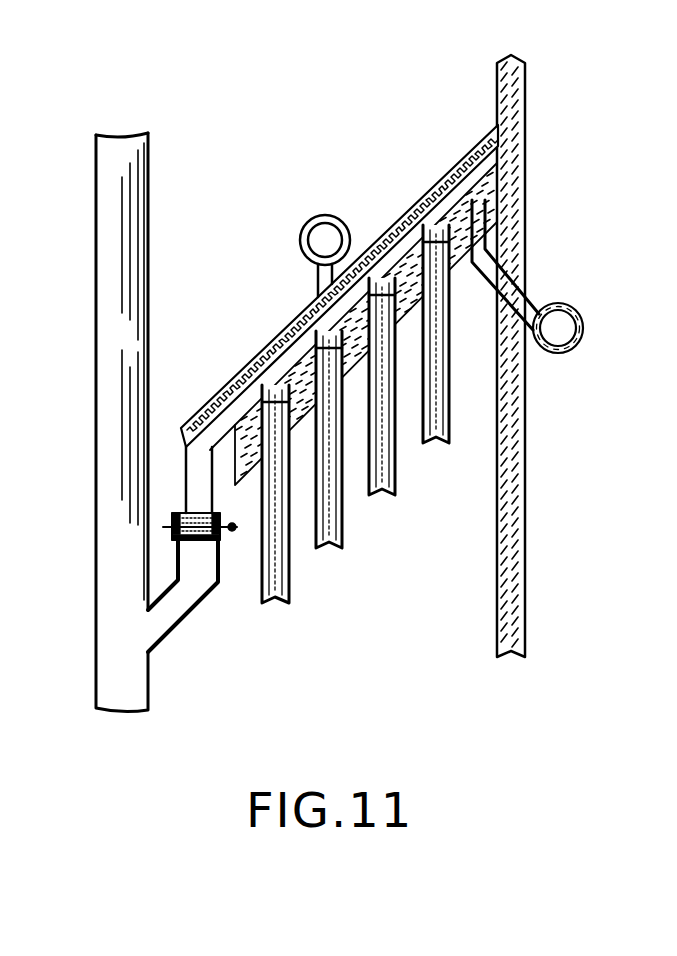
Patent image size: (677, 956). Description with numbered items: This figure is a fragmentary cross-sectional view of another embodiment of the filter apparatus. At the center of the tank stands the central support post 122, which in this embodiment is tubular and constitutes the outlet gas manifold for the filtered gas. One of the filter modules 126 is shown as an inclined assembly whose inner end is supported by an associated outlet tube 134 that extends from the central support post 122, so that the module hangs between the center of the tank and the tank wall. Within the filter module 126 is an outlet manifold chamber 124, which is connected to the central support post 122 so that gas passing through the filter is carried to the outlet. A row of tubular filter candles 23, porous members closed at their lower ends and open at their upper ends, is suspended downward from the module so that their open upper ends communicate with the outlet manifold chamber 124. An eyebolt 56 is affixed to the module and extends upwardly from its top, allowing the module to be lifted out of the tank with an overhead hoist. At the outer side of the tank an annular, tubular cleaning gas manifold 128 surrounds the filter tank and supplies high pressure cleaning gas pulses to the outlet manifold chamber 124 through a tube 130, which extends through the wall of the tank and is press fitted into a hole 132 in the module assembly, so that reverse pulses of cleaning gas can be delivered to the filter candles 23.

The central support post 122 is at (150, 177).
The outlet manifold chamber 124 is at (432, 220).
The filter module 126 is at (270, 317).
The cleaning gas manifold 128 is at (577, 352).
The tube 130 is at (530, 302).
The hole 132 is at (476, 192).
The outlet tube 134 is at (180, 625).
The eyebolt 56 is at (311, 220).
The filter candle 23 is at (342, 538).